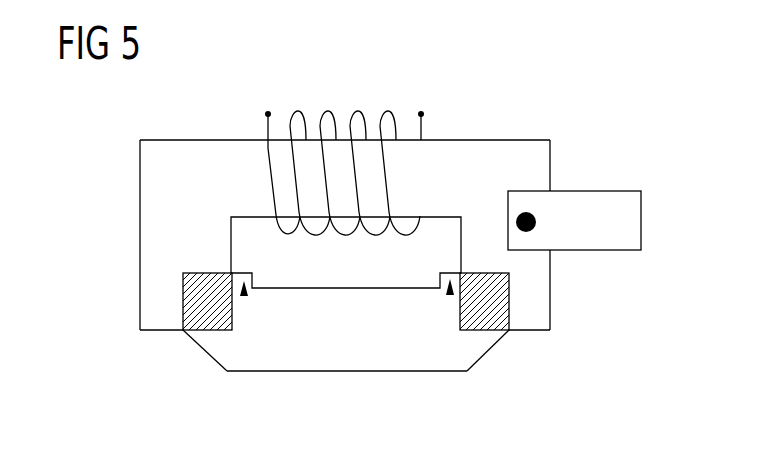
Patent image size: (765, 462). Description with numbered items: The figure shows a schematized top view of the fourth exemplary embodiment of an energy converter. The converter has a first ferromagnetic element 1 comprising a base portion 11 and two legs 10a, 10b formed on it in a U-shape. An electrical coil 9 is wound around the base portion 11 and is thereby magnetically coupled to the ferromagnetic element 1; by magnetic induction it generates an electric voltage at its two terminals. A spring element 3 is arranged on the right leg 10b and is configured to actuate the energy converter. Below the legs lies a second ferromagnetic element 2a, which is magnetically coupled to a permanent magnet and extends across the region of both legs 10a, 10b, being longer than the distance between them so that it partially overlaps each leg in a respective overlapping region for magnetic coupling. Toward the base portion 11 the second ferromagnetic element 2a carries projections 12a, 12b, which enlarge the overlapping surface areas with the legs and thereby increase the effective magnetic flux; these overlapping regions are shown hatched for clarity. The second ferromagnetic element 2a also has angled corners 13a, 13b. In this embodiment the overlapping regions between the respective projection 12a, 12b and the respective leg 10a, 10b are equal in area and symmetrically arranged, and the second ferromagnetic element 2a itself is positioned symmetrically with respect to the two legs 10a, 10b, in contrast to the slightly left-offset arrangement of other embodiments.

The ferromagnetic element 1 is at (100, 131).
The second ferromagnetic element 2a is at (341, 366).
The spring element 3 is at (631, 222).
The electrical coil 9 is at (268, 150).
The leg 10a is at (142, 229).
The leg 10b is at (543, 283).
The base portion 11 is at (540, 153).
The projection 12a is at (244, 297).
The projection 12b is at (450, 297).
The angled corner 13a is at (205, 353).
The angled corner 13b is at (489, 352).